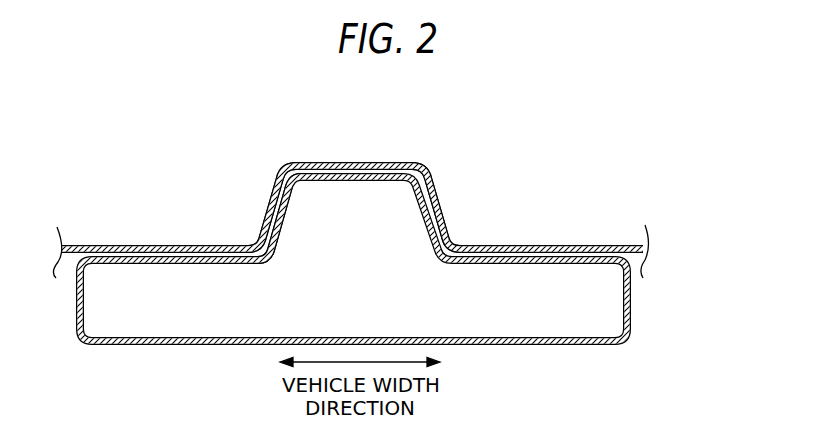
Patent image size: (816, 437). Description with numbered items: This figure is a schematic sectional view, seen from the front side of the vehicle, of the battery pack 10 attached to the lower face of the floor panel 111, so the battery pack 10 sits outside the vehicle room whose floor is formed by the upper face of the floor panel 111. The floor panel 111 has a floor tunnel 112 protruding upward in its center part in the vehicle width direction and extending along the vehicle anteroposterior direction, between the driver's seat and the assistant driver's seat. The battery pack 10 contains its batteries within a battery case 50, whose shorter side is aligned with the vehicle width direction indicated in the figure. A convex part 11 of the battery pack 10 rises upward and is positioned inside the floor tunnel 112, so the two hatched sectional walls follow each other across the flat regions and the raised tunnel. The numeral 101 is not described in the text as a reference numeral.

The battery pack 10 is at (645, 292).
The convex part 11 is at (327, 202).
The battery case 50 is at (468, 314).
The reinforcing panel 101 is at (548, 158).
The floor panel 111 is at (516, 246).
The floor tunnel 112 is at (357, 162).